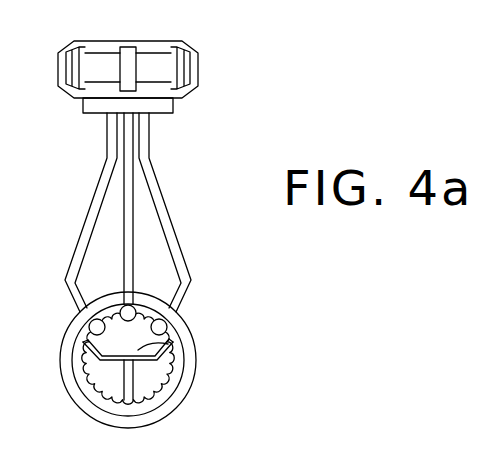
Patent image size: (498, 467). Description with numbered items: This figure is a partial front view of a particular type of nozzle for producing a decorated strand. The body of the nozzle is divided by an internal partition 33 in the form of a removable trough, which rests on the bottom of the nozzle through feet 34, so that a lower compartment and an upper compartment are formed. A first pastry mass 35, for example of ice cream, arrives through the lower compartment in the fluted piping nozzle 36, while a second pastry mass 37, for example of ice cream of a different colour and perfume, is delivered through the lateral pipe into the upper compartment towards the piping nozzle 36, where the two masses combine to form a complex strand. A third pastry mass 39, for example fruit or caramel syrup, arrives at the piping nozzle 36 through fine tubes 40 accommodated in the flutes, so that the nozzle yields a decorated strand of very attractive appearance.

The third pastry mass 39 is at (143, 17).
The fine tubes 40 is at (163, 215).
The fluted piping nozzle 36 is at (190, 386).
The feet 34 is at (101, 381).
The internal partition 33 is at (82, 342).
The second pastry mass 37 is at (178, 346).
The first pastry mass 35 is at (127, 400).